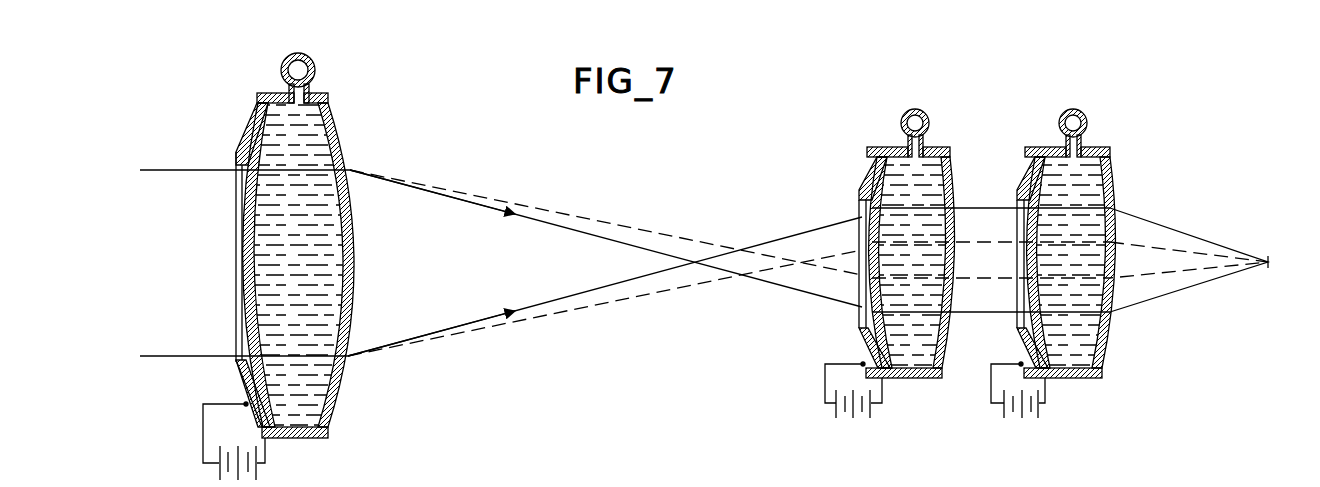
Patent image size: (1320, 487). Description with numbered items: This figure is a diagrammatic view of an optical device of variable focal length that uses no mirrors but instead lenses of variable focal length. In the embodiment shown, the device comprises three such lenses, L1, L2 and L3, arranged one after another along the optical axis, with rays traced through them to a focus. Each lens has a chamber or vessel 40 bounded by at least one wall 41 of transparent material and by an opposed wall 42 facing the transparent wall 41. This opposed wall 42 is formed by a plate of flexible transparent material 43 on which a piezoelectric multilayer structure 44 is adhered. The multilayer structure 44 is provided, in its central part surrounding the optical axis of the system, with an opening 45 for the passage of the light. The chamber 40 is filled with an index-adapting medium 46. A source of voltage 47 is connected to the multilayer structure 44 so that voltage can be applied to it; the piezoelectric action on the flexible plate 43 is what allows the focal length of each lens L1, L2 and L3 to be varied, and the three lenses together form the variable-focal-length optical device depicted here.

The chamber or vessel 40 is at (362, 321).
The transparent wall 41 is at (349, 240).
The opposed wall 42 is at (246, 150).
The plate of flexible transparent material 43 is at (252, 114).
The piezoelectric multilayer structure 44 is at (252, 401).
The opening 45 is at (244, 368).
The index-adapting medium 46 is at (304, 259).
The voltage source / battery 47 is at (236, 470).
The first lens of variable focal length L1 is at (336, 138).
The second lens of variable focal length L2 is at (938, 156).
The third lens of variable focal length L3 is at (1071, 263).